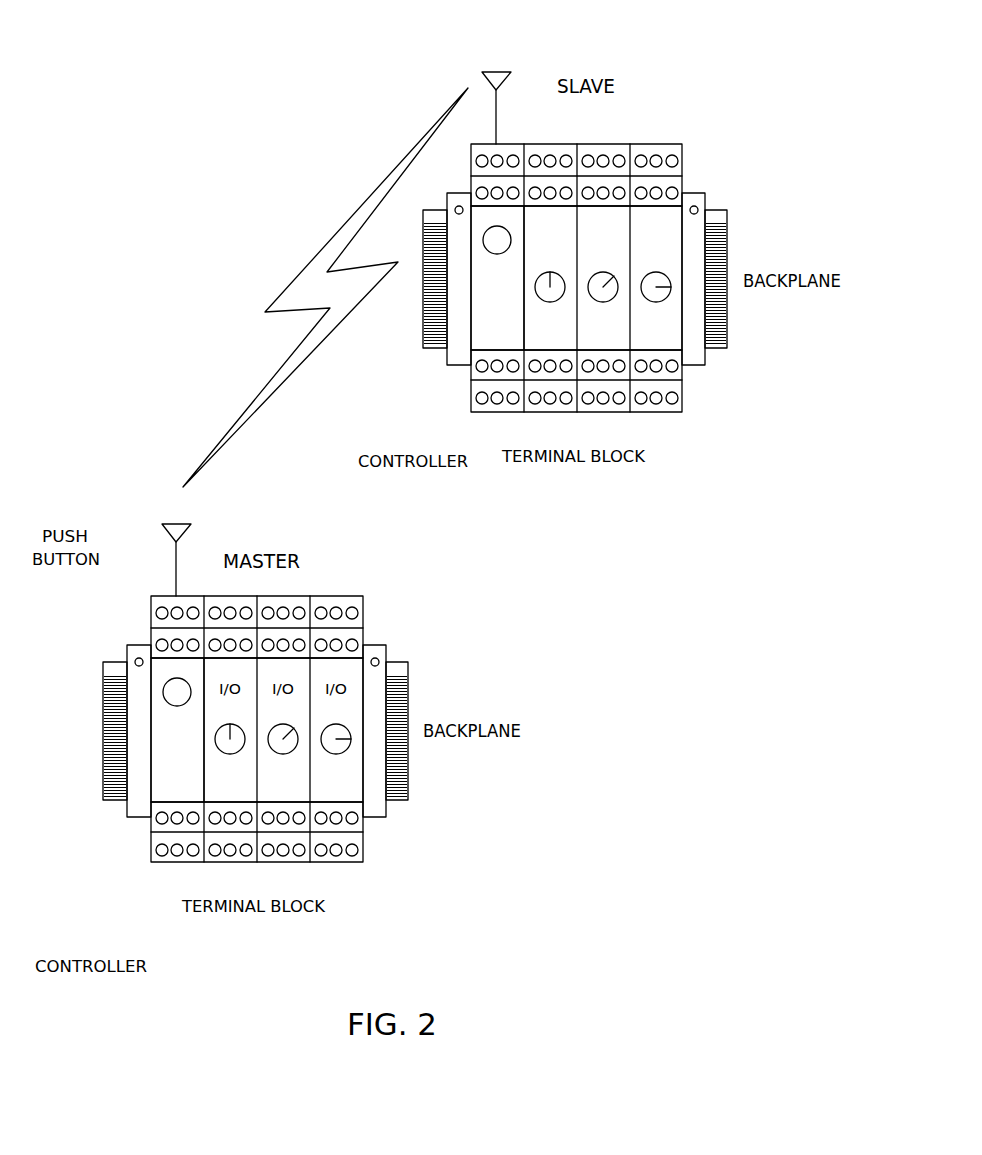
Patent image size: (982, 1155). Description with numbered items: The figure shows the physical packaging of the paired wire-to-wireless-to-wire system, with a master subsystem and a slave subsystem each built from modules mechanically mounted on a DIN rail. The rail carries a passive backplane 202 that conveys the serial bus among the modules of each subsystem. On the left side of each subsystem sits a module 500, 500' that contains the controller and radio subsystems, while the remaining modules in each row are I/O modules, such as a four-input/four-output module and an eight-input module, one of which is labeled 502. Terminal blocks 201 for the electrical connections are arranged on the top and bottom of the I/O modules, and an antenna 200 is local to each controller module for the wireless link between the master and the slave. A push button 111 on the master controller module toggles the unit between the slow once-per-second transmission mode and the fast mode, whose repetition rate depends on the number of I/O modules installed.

The antenna 200 is at (503, 87).
The terminal blocks 201 is at (683, 152).
The passive backplane 202 is at (729, 233).
The controller and radio module 500 is at (140, 806).
The controller and radio module 500' is at (459, 328).
The I/O module 502 is at (543, 143).
The push button 111 is at (160, 687).